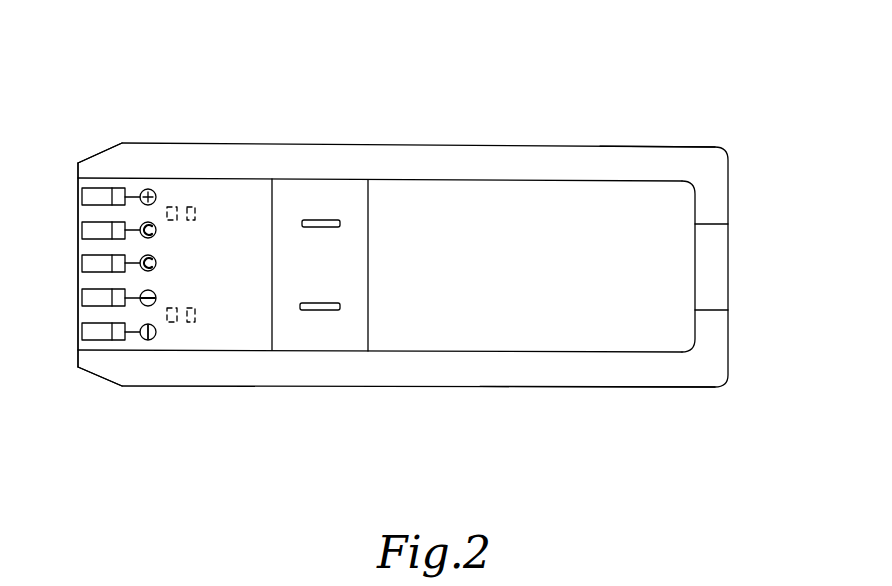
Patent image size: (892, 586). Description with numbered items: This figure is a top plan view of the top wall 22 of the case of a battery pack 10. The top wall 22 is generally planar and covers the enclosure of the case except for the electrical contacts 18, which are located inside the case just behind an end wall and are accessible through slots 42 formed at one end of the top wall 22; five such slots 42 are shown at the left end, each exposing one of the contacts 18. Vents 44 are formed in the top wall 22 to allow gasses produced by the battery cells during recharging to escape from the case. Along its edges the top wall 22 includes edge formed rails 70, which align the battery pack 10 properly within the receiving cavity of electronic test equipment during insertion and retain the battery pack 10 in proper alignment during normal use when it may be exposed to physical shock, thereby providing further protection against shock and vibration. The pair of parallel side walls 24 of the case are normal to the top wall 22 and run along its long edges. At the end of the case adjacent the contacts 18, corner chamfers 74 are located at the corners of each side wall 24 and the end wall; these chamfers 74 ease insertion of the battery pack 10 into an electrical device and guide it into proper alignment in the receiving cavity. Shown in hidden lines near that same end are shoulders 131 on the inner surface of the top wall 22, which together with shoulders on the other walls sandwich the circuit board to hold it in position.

The battery pack 10 is at (445, 80).
The electrical contacts 18 is at (93, 332).
The top wall 22 is at (640, 232).
The side walls 24 is at (628, 147).
The slots 42 is at (156, 326).
The vents 44 is at (312, 303).
The edge formed rails 70 is at (507, 160).
The corner chamfers 74 is at (105, 147).
The shoulders 131 is at (172, 207).